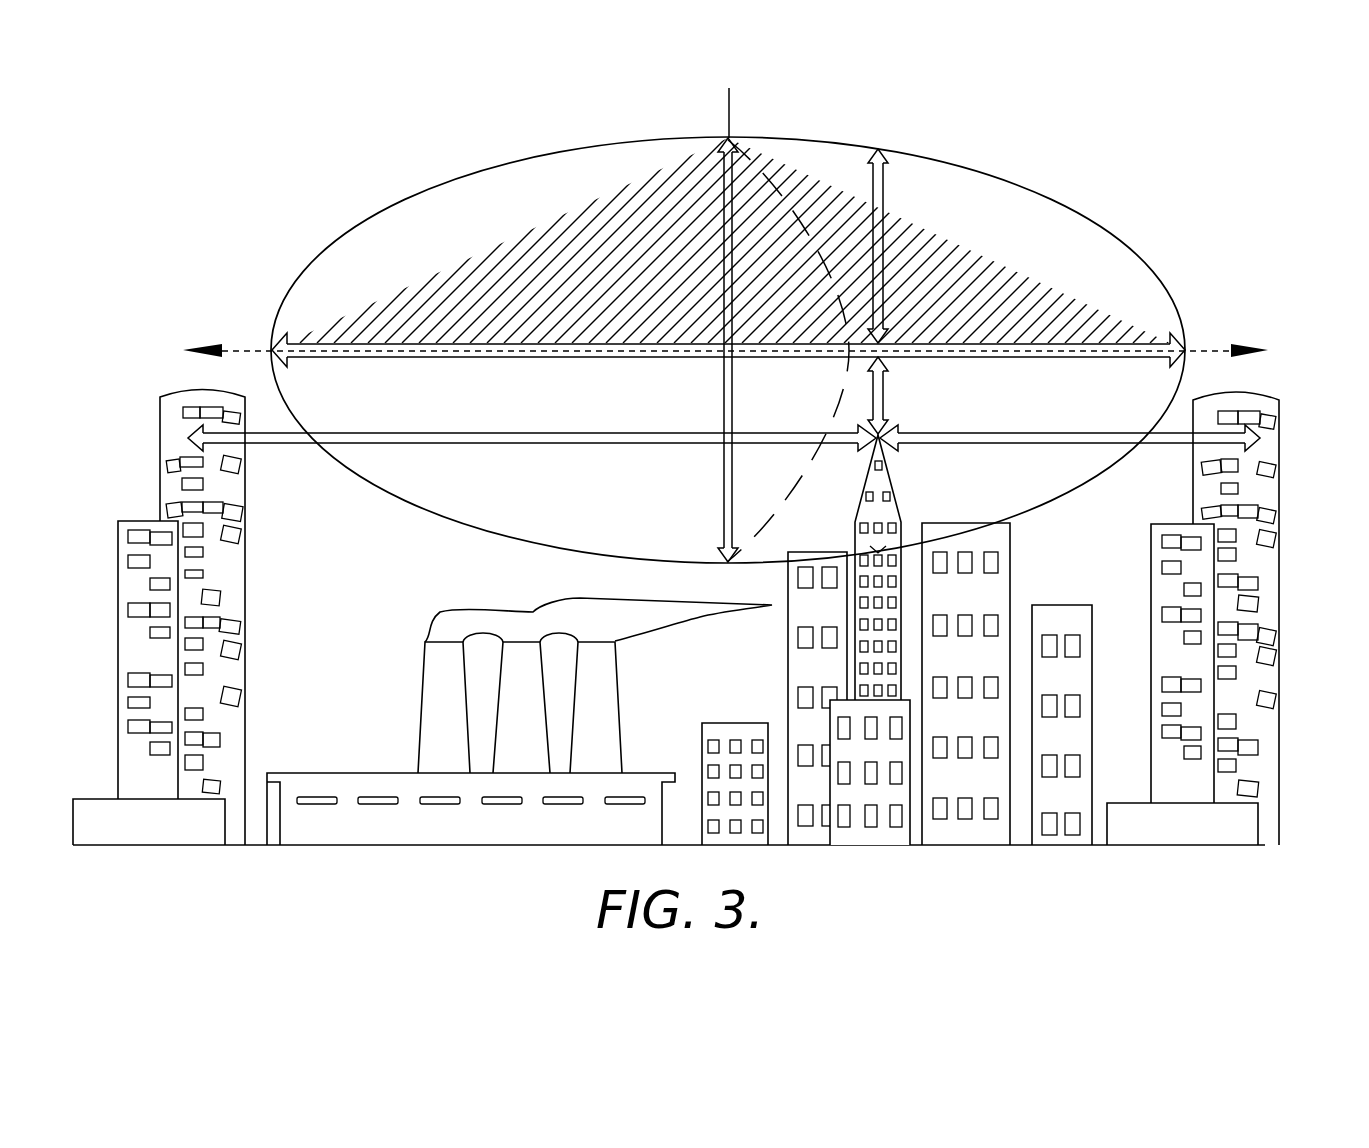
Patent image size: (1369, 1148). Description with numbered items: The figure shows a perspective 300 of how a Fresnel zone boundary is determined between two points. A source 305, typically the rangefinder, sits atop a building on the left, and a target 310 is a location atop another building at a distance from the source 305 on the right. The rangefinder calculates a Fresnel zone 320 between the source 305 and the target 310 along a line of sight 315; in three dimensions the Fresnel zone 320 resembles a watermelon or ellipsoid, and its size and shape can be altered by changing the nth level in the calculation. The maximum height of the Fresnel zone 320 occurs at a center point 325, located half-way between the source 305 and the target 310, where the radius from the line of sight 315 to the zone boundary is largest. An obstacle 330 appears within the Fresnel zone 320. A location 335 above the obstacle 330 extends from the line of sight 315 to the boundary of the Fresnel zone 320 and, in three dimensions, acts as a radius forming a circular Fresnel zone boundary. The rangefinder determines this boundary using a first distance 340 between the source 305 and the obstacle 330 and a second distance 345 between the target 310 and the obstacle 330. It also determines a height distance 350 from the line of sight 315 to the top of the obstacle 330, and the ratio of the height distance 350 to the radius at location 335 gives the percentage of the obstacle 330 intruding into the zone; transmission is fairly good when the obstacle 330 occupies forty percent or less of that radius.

The perspective 300 is at (324, 143).
The source 305 is at (152, 333).
The target 310 is at (1296, 337).
The line of sight 315 is at (468, 360).
The Fresnel zone 320 is at (484, 171).
The center point 325 is at (723, 154).
The obstacle 330 is at (893, 486).
The location 335 is at (884, 179).
The first distance 340 is at (603, 445).
The second distance 345 is at (1011, 433).
The height distance 350 is at (872, 388).